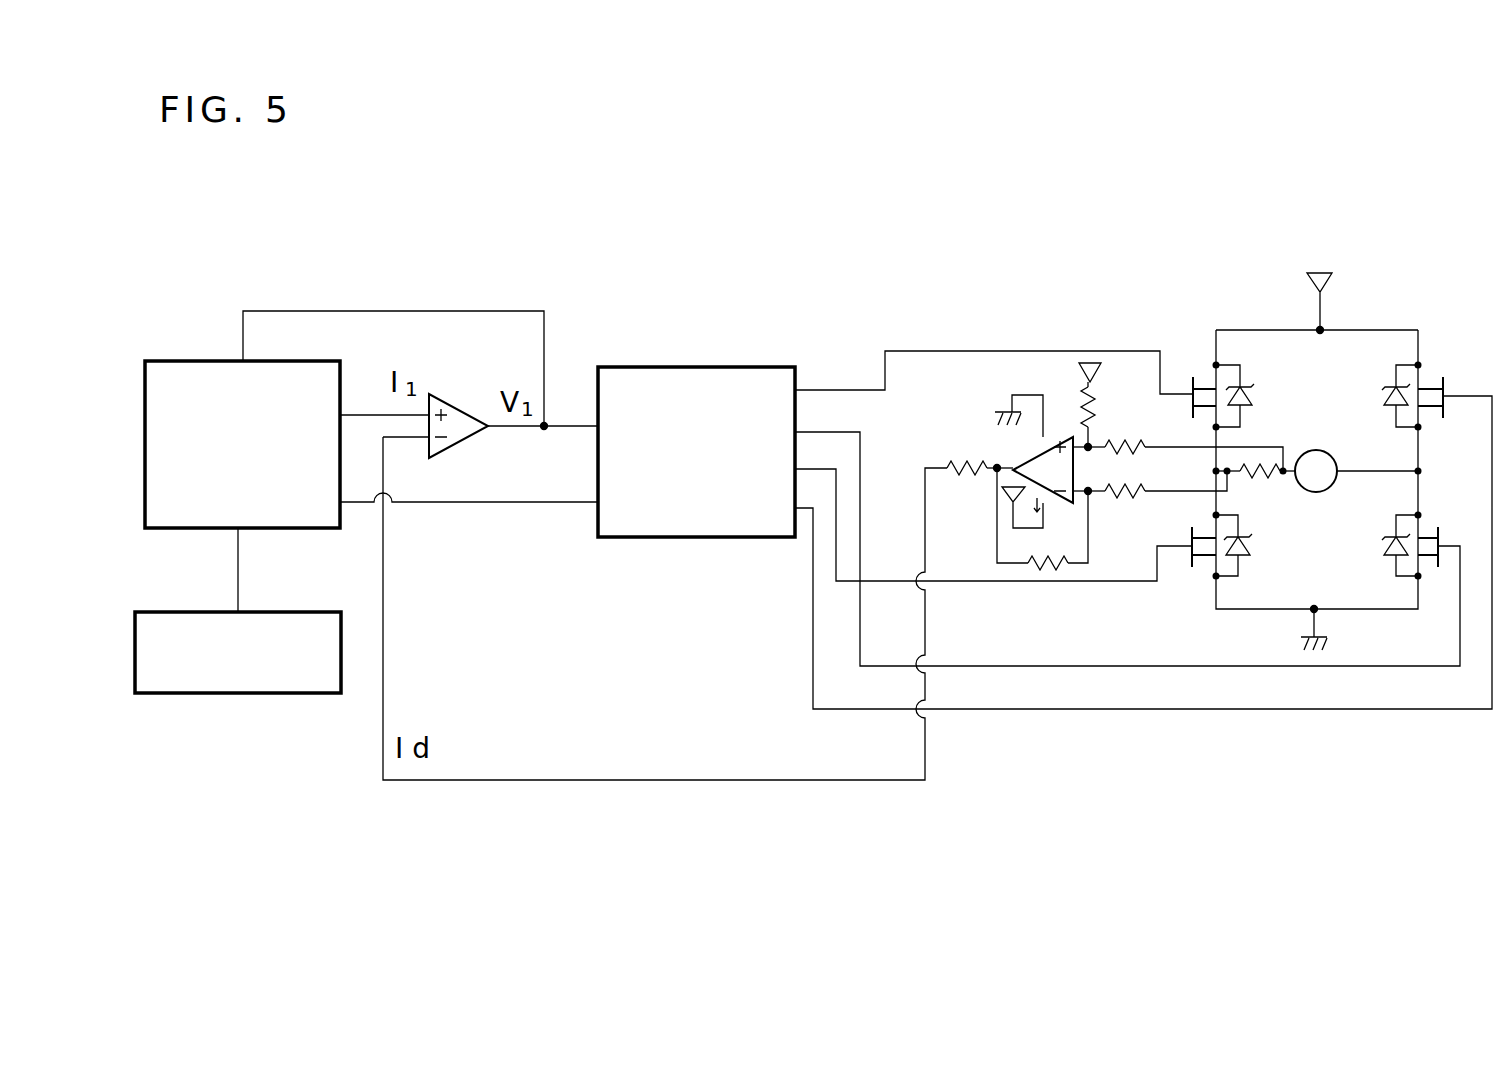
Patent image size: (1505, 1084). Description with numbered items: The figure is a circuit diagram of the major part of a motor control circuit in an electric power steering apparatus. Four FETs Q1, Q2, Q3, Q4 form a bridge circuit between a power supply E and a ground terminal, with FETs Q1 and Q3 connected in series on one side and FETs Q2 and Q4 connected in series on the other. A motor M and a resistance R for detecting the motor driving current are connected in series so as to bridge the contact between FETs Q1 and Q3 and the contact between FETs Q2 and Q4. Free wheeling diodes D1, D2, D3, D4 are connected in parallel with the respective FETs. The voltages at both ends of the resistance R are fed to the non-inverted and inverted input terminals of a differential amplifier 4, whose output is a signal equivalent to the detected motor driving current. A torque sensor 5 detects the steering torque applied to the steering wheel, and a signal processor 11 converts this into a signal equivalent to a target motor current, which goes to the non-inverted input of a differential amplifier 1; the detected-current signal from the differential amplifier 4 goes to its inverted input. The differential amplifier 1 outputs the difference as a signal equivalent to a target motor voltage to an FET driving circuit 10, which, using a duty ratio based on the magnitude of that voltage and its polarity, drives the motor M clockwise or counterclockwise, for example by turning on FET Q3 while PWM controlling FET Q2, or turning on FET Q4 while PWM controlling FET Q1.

The differential amplifier 1 is at (452, 456).
The differential amplifier 4 is at (1032, 457).
The torque sensor 5 is at (312, 612).
The FET driving circuit 10 is at (753, 366).
The signal processor 11 is at (242, 361).
The FET Q1 is at (1194, 378).
The FET Q2 is at (1445, 380).
The FET Q3 is at (1187, 563).
The FET Q4 is at (1444, 532).
The free wheeling diode D1 is at (1248, 391).
The free wheeling diode D2 is at (1392, 391).
The free wheeling diode D3 is at (1247, 556).
The free wheeling diode D4 is at (1383, 556).
The resistance for detecting motor driving current R is at (1255, 484).
The motor M is at (1356, 471).
The power supply E is at (1323, 273).